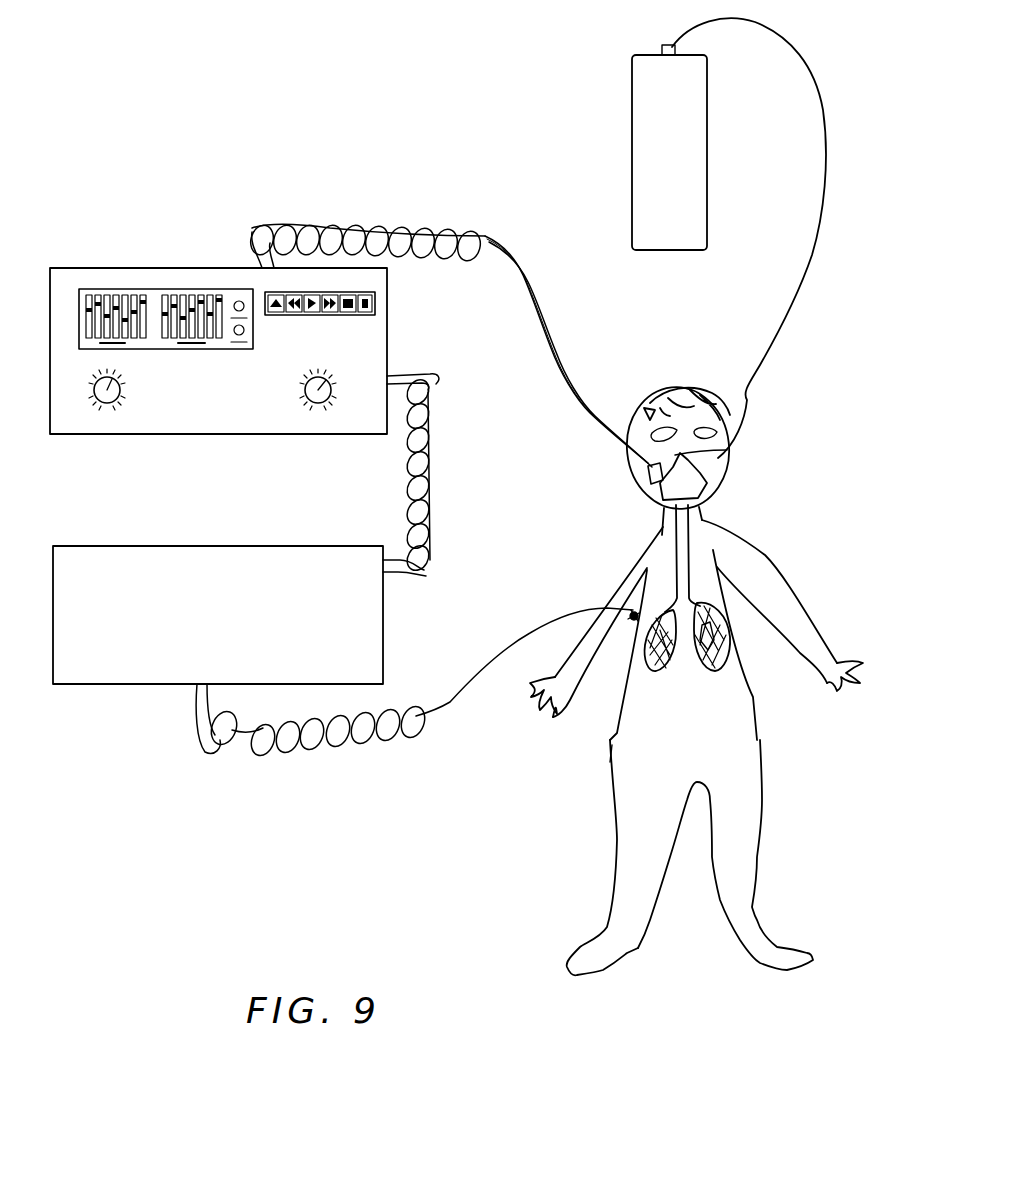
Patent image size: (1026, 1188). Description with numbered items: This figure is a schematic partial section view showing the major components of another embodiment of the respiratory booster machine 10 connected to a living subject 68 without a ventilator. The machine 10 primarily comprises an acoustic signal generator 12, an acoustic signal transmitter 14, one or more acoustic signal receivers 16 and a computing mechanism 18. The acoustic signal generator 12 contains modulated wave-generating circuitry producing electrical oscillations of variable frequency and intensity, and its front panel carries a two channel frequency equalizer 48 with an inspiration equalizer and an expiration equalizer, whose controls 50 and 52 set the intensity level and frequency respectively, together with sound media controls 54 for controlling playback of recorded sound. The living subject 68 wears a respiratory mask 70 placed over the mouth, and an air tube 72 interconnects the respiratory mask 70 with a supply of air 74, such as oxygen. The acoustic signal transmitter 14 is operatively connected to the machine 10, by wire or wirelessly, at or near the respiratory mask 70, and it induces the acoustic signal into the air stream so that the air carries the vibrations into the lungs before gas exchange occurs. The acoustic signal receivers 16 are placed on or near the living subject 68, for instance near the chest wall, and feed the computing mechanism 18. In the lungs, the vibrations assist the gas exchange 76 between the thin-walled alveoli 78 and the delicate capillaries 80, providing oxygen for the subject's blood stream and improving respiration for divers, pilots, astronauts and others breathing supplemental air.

The respiratory booster machine 10 is at (307, 190).
The acoustic signal generator 12 is at (118, 264).
The acoustic signal transmitter 14 is at (648, 482).
The acoustic signal receiver 16 is at (633, 606).
The computing mechanism 18 is at (135, 660).
The two channel frequency equalizer 48 is at (156, 300).
The intensity level control 50 is at (112, 398).
The frequency control 52 is at (310, 392).
The sound media controls 54 is at (375, 302).
The living subject 68 is at (758, 545).
The respiratory mask 70 is at (683, 478).
The air tube 72 is at (780, 317).
The supply of air 74 is at (650, 170).
The gas exchange 76 is at (712, 672).
The alveoli 78 is at (647, 640).
The capillaries 80 is at (716, 633).